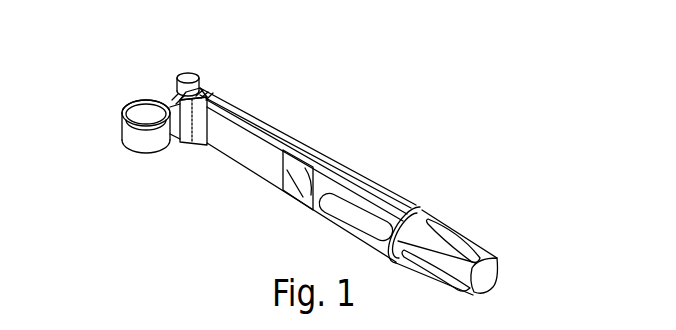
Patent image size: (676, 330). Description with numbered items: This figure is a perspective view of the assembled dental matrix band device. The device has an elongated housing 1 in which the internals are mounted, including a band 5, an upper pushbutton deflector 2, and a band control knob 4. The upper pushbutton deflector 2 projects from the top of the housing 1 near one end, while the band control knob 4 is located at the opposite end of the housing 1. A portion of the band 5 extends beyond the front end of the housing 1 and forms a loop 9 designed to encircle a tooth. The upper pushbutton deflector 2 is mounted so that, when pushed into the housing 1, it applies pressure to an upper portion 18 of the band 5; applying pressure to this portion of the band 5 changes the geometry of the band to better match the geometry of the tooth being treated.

The elongated housing 1 is at (330, 153).
The upper pushbutton deflector 2 is at (191, 73).
The band control knob 4 is at (497, 267).
The band 5 is at (122, 130).
The loop 9 is at (143, 122).
The upper portion 18 is at (127, 105).